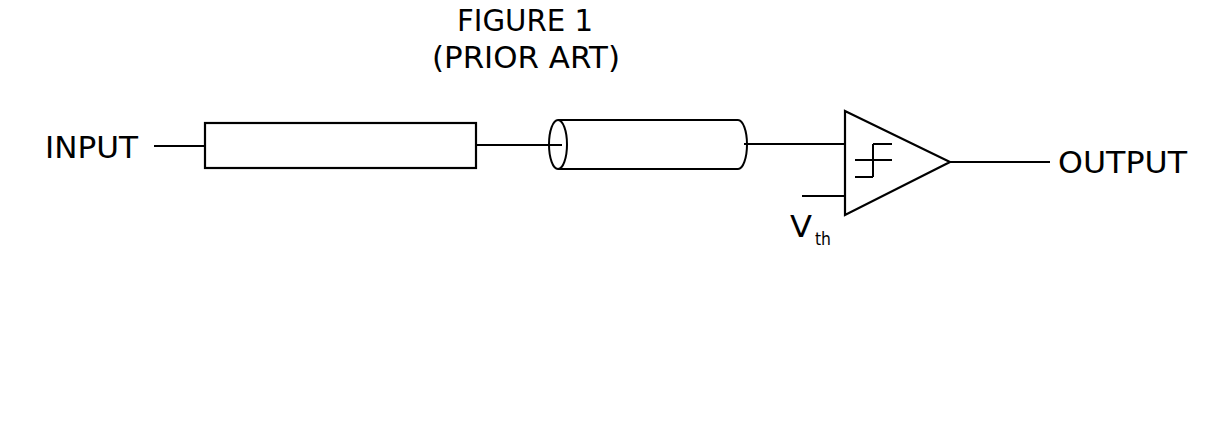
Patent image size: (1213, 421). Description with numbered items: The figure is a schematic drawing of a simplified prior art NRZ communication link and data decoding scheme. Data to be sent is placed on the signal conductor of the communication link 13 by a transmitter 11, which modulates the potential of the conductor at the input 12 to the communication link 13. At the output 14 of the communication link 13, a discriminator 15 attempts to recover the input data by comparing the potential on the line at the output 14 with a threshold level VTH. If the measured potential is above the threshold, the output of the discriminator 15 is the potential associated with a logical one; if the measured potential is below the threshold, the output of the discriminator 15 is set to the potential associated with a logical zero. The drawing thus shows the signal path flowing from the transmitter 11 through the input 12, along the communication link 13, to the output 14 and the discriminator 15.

The transmitter 11 is at (417, 168).
The input 12 is at (503, 148).
The communication link 13 is at (617, 162).
The output 14 is at (780, 142).
The discriminator 15 is at (908, 143).